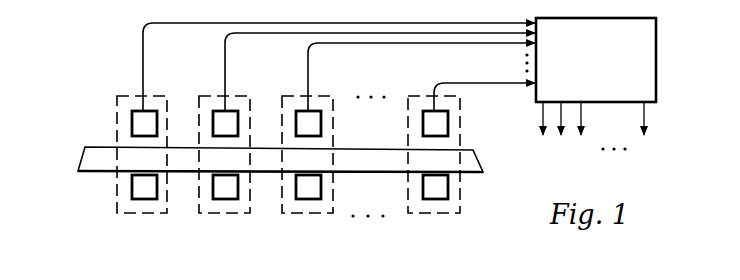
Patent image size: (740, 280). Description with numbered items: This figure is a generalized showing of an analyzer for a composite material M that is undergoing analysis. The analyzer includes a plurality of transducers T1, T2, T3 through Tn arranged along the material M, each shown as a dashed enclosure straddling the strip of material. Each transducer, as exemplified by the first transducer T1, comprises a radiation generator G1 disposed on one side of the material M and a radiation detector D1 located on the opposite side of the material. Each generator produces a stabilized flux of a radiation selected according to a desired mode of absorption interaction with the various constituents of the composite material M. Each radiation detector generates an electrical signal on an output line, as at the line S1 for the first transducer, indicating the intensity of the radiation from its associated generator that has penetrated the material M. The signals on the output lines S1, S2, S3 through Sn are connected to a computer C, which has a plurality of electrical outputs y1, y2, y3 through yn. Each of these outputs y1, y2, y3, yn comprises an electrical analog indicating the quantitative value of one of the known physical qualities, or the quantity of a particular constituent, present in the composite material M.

The composite material M is at (80, 157).
The transducer T1 is at (145, 213).
The transducer T2 is at (227, 213).
The transducer T3 is at (310, 213).
The transducer Tn is at (436, 213).
The radiation detector D1 is at (132, 123).
The radiation generator G1 is at (132, 186).
The output line S1 is at (142, 49).
The output line S2 is at (224, 57).
The output line S3 is at (307, 70).
The output line Sn is at (433, 86).
The computer C is at (657, 63).
The electrical output y1 is at (545, 132).
The electrical output y2 is at (563, 133).
The electrical output y3 is at (582, 133).
The electrical output yn is at (644, 133).